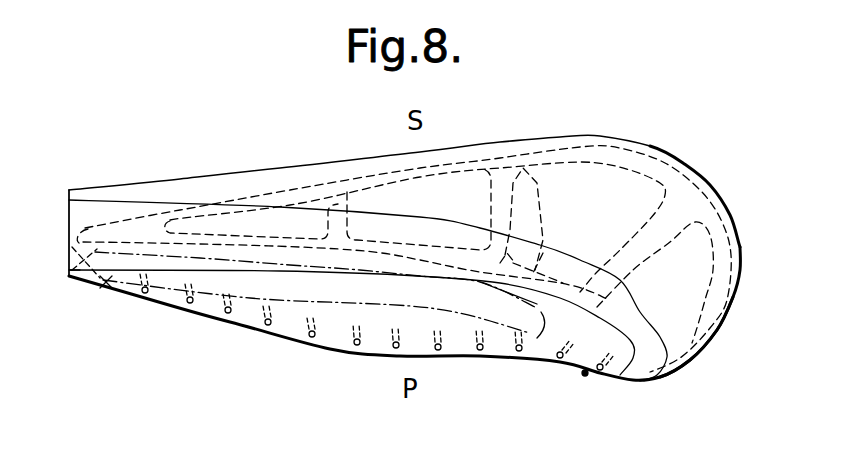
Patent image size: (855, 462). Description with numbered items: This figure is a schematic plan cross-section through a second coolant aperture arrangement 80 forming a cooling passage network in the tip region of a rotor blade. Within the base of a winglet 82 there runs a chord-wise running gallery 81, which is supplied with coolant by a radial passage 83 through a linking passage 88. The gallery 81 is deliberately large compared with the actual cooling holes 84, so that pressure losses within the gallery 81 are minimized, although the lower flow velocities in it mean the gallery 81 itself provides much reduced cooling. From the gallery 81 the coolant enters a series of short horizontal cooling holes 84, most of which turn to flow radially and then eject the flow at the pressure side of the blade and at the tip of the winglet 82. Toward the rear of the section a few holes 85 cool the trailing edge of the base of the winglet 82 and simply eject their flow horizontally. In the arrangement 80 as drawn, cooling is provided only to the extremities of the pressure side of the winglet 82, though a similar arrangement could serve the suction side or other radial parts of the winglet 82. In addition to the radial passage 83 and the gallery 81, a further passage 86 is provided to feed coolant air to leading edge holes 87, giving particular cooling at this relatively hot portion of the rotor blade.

The arrangement 80 is at (710, 184).
The chord-wise running gallery 81 is at (375, 298).
The winglet 82 is at (255, 315).
The radial passage 83 is at (250, 205).
The cooling holes 84 is at (117, 297).
The holes 85 is at (72, 242).
The further passage 86 is at (703, 325).
The leading edge holes 87 is at (585, 375).
The linking passage 88 is at (512, 152).